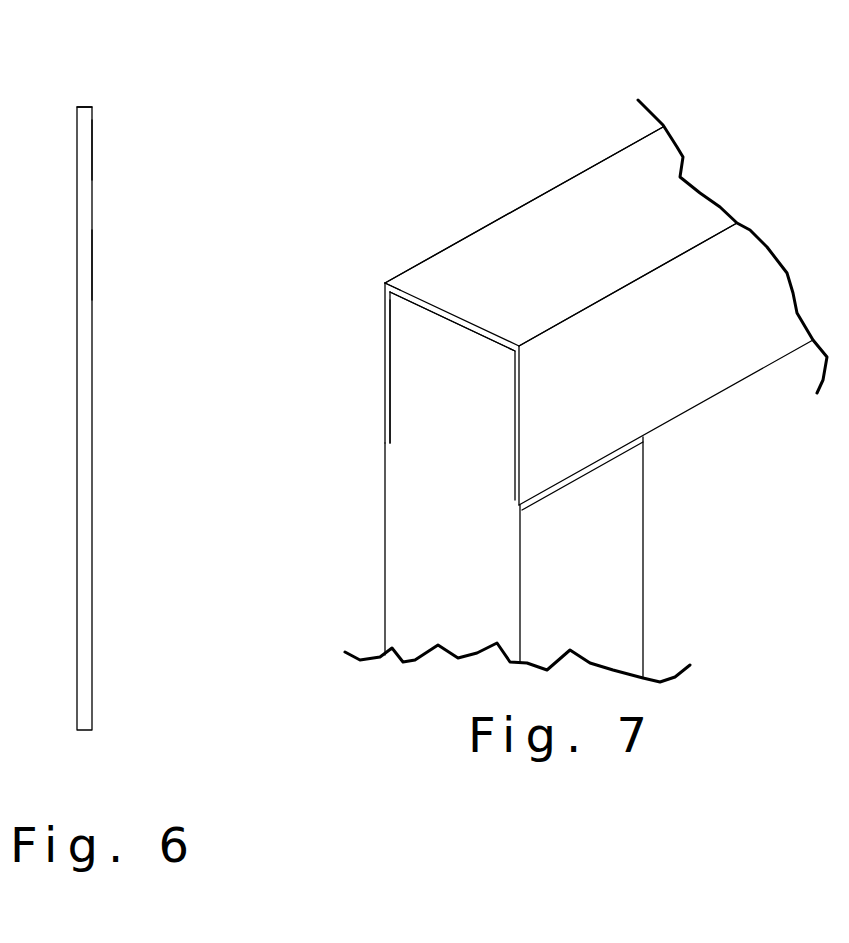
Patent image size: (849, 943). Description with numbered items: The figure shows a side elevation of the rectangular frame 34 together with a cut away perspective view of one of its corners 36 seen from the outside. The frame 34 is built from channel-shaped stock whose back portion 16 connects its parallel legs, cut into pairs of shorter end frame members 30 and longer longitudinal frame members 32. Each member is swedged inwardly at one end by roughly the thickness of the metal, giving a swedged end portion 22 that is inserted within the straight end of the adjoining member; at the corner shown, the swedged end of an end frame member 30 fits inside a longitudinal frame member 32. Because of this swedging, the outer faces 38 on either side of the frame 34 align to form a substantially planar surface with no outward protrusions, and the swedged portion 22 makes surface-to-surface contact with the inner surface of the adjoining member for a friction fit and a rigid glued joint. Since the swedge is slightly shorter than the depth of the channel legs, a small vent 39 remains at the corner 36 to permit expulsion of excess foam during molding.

In FIG. 6, the back portion 16 is at (84, 376).
In FIG. 7, the back portion 16 is at (513, 257).
In FIG. 7, the swedged end portion 22 is at (390, 387).
In FIG. 6, the end frame member 30 is at (85, 106).
In FIG. 7, the end frame member 30 is at (588, 168).
In FIG. 6, the longitudinal frame member 32 is at (92, 265).
In FIG. 7, the longitudinal frame member 32 is at (385, 570).
In FIG. 6, the rectangular frame 34 is at (93, 157).
In FIG. 7, the corner 36 is at (385, 283).
In FIG. 7, the outer face 38 is at (697, 377).
In FIG. 7, the vent 39 is at (415, 305).